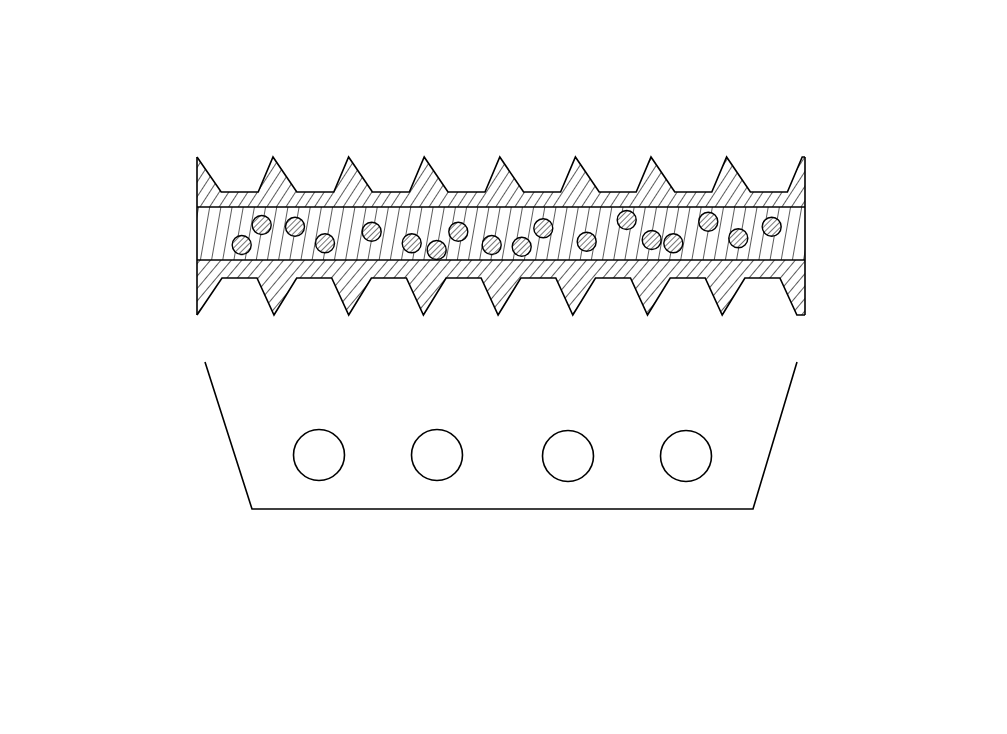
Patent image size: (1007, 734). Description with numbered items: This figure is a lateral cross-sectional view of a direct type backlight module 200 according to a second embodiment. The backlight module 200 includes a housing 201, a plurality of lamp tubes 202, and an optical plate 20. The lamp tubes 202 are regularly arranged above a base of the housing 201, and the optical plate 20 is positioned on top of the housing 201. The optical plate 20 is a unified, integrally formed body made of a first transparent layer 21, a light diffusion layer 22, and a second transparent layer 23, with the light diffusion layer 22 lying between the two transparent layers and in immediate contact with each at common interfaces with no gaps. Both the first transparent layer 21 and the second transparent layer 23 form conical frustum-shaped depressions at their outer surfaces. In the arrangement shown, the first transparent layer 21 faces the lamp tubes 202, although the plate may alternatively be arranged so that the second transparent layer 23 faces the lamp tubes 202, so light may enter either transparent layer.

The direct type backlight module 200 is at (521, 36).
The optical plate 20 is at (102, 162).
The second transparent layer 23 is at (207, 178).
The light diffusion layer 22 is at (203, 237).
The first transparent layer 21 is at (208, 292).
The housing 201 is at (785, 408).
The lamp tubes 202 is at (687, 457).